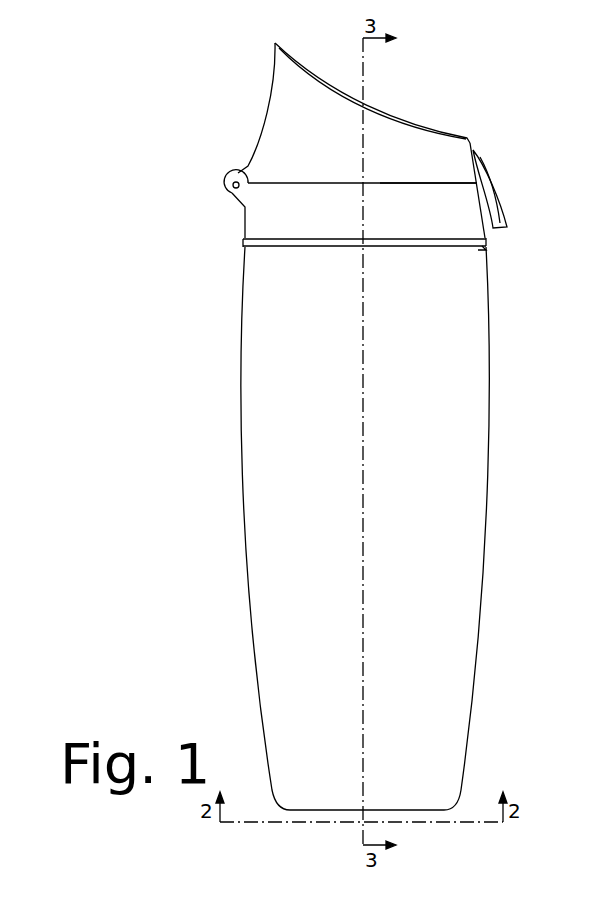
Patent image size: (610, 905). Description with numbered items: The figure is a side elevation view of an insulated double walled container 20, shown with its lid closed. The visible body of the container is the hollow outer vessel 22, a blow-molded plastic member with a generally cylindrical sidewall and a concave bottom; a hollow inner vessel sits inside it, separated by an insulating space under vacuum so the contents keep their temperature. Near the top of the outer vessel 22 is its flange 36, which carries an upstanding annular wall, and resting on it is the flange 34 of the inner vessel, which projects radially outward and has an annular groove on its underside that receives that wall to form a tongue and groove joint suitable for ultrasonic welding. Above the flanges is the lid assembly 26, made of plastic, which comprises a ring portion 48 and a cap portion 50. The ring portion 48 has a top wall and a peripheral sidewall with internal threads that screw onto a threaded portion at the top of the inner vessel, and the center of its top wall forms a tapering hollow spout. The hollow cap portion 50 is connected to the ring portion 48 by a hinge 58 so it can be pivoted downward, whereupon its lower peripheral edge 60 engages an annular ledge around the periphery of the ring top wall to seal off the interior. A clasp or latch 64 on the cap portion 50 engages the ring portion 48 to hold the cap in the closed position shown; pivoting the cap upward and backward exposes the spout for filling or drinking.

The double walled container 20 is at (208, 423).
The outer vessel 22 is at (457, 422).
The lid assembly 26 is at (440, 162).
The flange of the inner vessel 34 is at (488, 240).
The flange of the outer vessel 36 is at (478, 249).
The ring portion 48 is at (283, 213).
The cap portion 50 is at (307, 130).
The hinge 58 is at (230, 191).
The lower peripheral edge 60 is at (386, 183).
The clasp or latch 64 is at (493, 200).